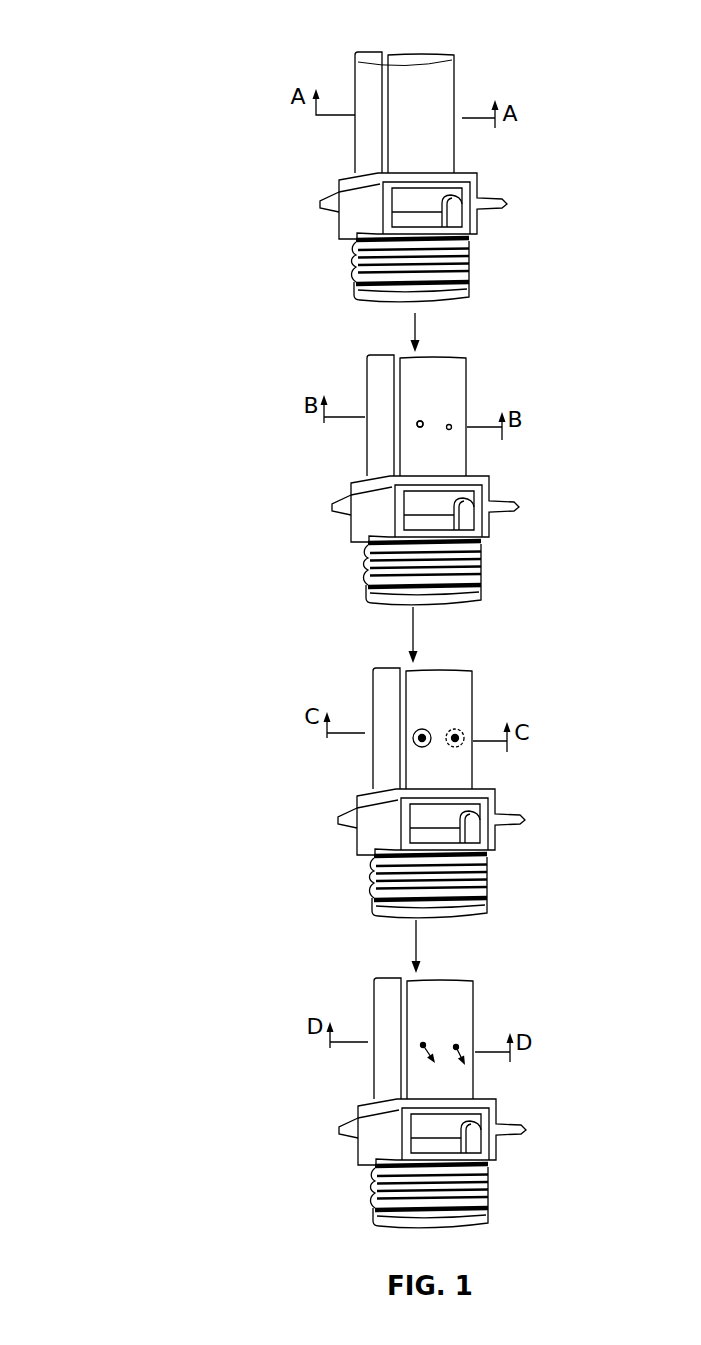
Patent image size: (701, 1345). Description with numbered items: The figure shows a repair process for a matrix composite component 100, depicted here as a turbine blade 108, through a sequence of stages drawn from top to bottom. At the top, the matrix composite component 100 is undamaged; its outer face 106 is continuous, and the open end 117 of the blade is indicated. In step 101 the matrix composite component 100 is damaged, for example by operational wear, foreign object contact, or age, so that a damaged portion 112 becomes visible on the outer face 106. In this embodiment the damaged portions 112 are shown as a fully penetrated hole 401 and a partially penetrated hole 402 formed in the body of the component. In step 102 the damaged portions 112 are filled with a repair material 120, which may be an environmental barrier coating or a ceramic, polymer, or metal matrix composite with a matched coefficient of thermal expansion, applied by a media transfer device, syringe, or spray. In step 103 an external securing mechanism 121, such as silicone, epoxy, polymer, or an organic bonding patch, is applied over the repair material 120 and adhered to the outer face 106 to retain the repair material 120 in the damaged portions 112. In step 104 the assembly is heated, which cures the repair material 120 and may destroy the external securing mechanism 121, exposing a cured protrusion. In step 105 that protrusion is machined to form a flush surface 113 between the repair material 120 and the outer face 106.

The matrix composite component 100 is at (242, 153).
The outer face 106 is at (439, 72).
The turbine blade 108 is at (320, 60).
The open end 117 is at (402, 57).
The damaging step 101 is at (415, 316).
The filling step 102 is at (413, 612).
The securing step 103 is at (413, 635).
The heating step 104 is at (416, 923).
The machining step 105 is at (417, 947).
The fully penetrated hole 401 is at (418, 427).
The partially penetrated hole 402 is at (452, 424).
The damaged portion 112 is at (423, 427).
The external securing mechanism 121 is at (460, 729).
The repair material 120 is at (460, 748).
The flush surface 113 is at (465, 1065).